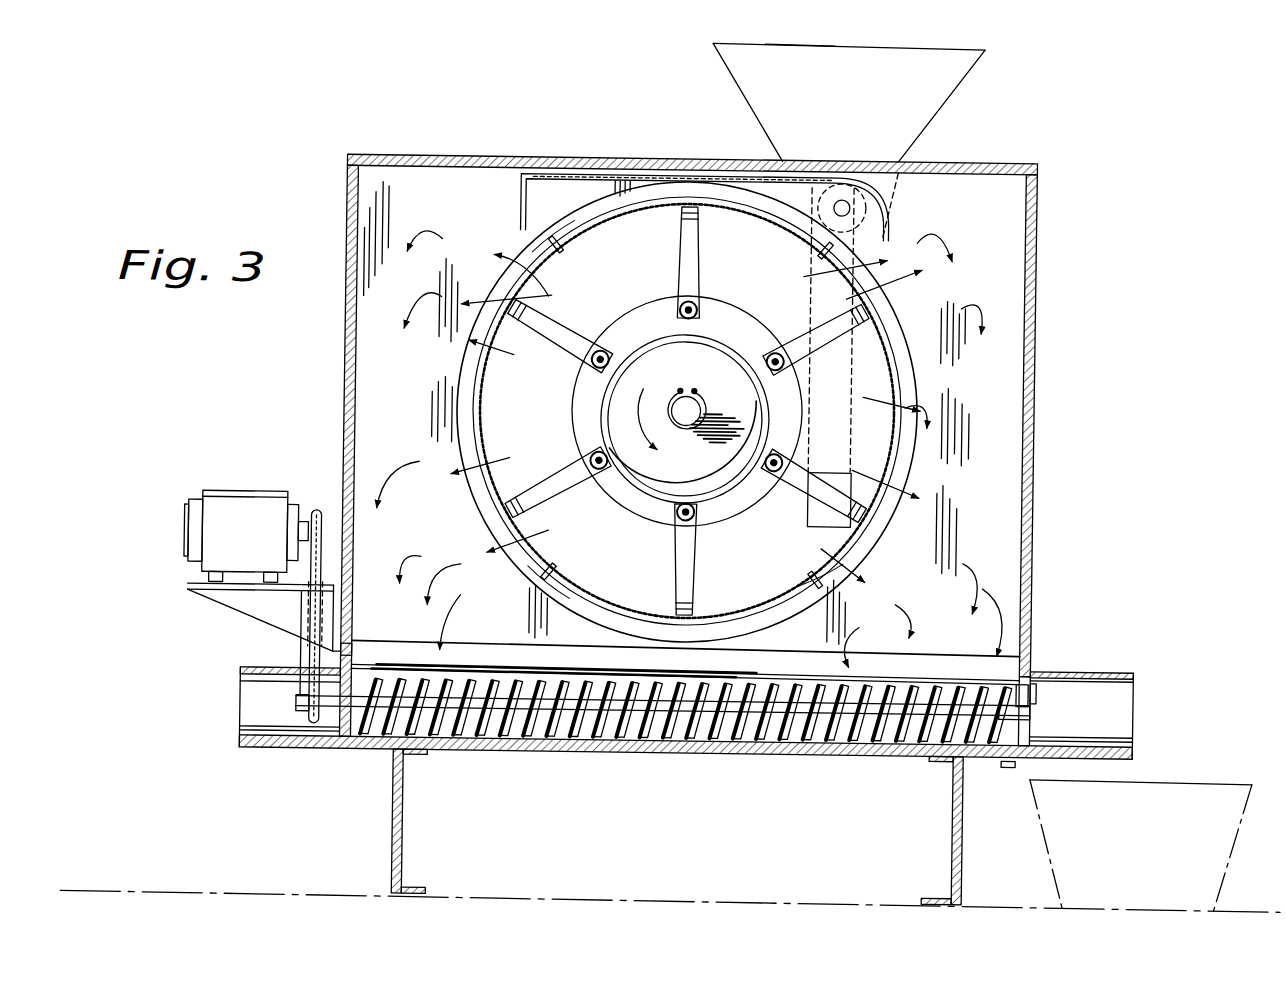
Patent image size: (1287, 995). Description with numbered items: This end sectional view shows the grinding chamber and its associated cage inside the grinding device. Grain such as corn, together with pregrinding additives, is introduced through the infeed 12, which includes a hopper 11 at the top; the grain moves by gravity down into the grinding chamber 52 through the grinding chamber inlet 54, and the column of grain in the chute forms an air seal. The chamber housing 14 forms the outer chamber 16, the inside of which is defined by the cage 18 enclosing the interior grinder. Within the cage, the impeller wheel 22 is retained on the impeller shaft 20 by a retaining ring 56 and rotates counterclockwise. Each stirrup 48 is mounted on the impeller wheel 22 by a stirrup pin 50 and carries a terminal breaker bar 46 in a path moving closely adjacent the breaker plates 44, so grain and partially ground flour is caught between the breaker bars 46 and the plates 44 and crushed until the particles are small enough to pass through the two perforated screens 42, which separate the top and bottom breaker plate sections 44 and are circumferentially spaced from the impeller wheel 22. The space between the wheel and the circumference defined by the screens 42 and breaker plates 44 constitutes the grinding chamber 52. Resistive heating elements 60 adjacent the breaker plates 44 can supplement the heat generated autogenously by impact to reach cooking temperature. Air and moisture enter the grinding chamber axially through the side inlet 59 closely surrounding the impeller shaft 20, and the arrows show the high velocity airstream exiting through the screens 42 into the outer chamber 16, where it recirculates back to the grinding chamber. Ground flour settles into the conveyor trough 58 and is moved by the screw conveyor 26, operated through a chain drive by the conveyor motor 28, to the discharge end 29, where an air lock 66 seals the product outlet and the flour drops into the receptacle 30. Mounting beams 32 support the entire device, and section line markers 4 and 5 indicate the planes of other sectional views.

The section line 4- 4 is at (500, 107).
The section line 5- 5 is at (655, 128).
The hopper 11 is at (878, 46).
The infeed 12 is at (795, 41).
The chamber housing 14 is at (1036, 220).
The outer chamber 16 is at (344, 302).
The cage 18 is at (922, 374).
The impeller shaft 20 is at (840, 526).
The impeller wheel 22 is at (792, 410).
The screw conveyor 26 is at (794, 752).
The conveyor motor 28 is at (216, 498).
The discharge end 29 is at (1138, 692).
The receptacle 30 is at (1222, 777).
The mounting beams 32 is at (410, 841).
The perforated screens 42 is at (918, 440).
The breaker plates 44 is at (778, 246).
The breaker bars 46 is at (700, 198).
The stirrup 48 is at (680, 249).
The stirrup pin 50 is at (700, 306).
The grinding chamber 52 is at (870, 178).
The grinding chamber inlet 54 is at (548, 534).
The retaining ring 56 is at (682, 397).
The conveyor trough 58 is at (370, 662).
The side inlet 59 is at (702, 418).
The resistive heating elements 60 is at (725, 213).
The air lock 66 is at (1032, 686).